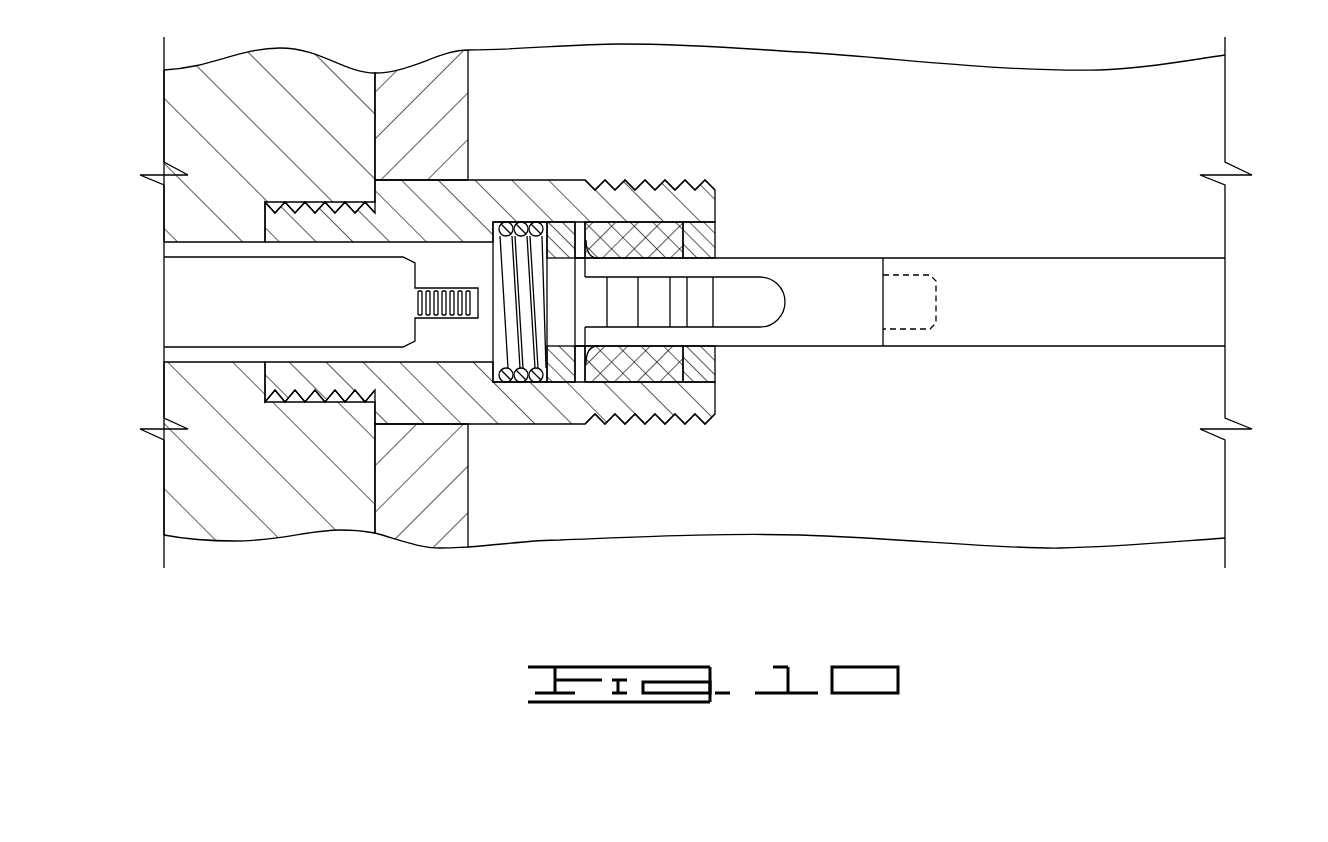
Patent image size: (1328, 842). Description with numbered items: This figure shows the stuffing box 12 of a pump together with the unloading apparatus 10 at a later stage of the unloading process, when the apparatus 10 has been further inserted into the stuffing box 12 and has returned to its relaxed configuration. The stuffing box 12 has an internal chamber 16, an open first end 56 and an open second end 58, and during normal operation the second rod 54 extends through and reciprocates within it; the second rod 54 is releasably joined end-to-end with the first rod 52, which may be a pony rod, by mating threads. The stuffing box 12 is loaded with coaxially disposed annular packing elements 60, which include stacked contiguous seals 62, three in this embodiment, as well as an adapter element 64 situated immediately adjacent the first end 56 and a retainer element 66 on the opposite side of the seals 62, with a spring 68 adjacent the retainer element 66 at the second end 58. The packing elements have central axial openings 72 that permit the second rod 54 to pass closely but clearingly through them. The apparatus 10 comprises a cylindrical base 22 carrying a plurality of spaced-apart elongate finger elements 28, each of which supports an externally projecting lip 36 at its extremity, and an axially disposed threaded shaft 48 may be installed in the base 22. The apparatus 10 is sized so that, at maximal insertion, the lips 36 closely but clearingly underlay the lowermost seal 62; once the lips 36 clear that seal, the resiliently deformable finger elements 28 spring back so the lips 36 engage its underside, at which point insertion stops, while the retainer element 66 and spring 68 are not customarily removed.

The apparatus 10 is at (837, 353).
The stuffing box 12 is at (530, 180).
The internal chamber 16 is at (550, 380).
The base 22 is at (858, 267).
The finger elements 28 is at (726, 268).
The lip 36 is at (587, 222).
The threaded shaft 48 is at (936, 332).
The first rod 52 is at (1209, 287).
The second rod 54 is at (185, 322).
The first end 56 is at (716, 200).
The second end 58 is at (263, 226).
The packing elements 60 is at (662, 222).
The seals 62 is at (601, 372).
The adapter element 64 is at (703, 222).
The retainer element 66 is at (560, 222).
The spring 68 is at (507, 222).
The central axial openings 72 is at (708, 312).